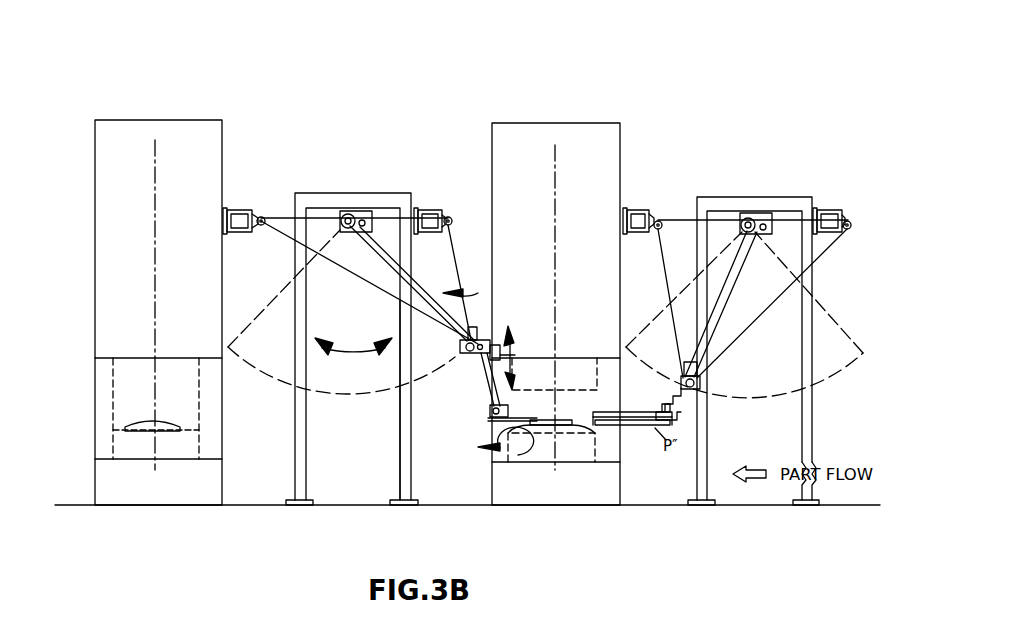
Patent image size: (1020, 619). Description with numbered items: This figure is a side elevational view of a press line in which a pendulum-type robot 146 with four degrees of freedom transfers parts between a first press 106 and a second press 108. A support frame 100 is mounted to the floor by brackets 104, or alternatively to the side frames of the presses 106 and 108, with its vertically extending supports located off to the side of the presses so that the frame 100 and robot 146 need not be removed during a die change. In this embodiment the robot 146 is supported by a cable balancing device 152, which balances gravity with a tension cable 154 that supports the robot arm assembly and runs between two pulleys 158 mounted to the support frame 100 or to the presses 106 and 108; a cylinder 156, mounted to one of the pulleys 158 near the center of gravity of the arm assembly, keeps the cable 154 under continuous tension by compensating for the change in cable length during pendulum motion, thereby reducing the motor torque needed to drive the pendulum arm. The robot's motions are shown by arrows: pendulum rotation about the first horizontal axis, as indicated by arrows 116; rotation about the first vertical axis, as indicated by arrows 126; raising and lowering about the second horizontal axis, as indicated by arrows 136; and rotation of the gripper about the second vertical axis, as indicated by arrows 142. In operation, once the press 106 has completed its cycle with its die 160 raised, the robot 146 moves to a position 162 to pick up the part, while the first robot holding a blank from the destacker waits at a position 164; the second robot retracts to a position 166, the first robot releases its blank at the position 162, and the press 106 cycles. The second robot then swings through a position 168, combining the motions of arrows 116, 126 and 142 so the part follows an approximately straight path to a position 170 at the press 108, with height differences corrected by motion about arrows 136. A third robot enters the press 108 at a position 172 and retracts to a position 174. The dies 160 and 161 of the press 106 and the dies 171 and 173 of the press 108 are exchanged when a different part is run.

The support frame 100 is at (317, 193).
The brackets 104 is at (388, 506).
The press 106 is at (584, 123).
The press 108 is at (132, 120).
The arrows 116 is at (353, 358).
The arrows 126 is at (478, 295).
The arrows 136 is at (513, 360).
The arrows 142 is at (510, 435).
The robot 146 is at (363, 243).
The cable balancing device 152 is at (277, 215).
The tension cable 154 is at (283, 247).
The cylinder 156 is at (432, 233).
The pulleys 158 is at (258, 218).
The die 160 is at (560, 372).
The die 161 is at (528, 455).
The position 162 is at (555, 442).
The position 164 is at (635, 437).
The position 166 is at (462, 415).
The position 168 is at (350, 440).
The position 170 is at (250, 438).
The die 171 is at (138, 367).
The position 172 is at (144, 438).
The die 173 is at (160, 440).
The position 174 is at (63, 433).